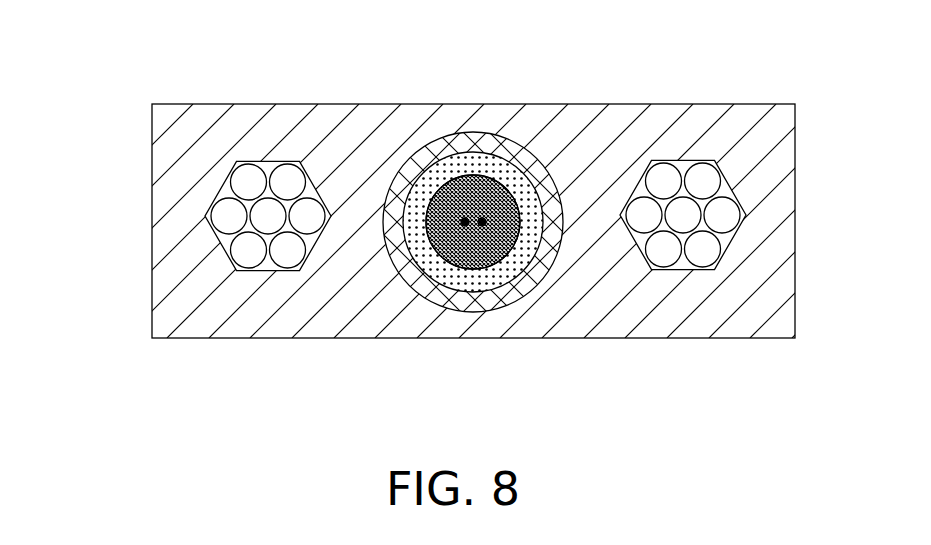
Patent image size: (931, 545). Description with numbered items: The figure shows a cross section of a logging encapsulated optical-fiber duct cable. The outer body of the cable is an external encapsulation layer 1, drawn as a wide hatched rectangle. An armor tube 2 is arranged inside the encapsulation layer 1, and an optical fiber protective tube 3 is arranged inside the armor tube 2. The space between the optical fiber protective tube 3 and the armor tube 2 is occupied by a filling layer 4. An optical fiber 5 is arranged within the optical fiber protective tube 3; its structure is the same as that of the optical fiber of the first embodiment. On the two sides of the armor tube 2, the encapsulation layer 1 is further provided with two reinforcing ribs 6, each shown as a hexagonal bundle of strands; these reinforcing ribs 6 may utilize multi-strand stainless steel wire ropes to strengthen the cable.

The encapsulation layer 1 is at (305, 118).
The armor tube 2 is at (432, 155).
The optical fiber protective tube 3 is at (478, 172).
The filling layer 4 is at (522, 148).
The optical fiber 5 is at (472, 245).
The reinforcing rib 6 is at (265, 217).